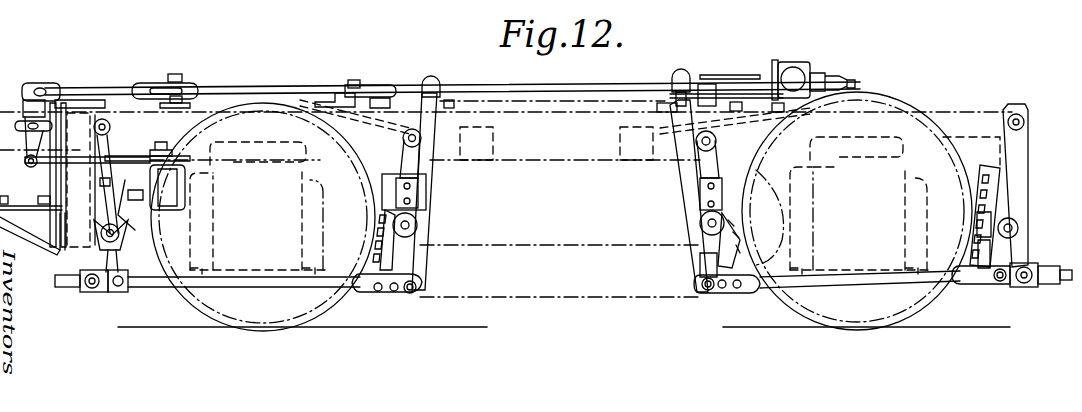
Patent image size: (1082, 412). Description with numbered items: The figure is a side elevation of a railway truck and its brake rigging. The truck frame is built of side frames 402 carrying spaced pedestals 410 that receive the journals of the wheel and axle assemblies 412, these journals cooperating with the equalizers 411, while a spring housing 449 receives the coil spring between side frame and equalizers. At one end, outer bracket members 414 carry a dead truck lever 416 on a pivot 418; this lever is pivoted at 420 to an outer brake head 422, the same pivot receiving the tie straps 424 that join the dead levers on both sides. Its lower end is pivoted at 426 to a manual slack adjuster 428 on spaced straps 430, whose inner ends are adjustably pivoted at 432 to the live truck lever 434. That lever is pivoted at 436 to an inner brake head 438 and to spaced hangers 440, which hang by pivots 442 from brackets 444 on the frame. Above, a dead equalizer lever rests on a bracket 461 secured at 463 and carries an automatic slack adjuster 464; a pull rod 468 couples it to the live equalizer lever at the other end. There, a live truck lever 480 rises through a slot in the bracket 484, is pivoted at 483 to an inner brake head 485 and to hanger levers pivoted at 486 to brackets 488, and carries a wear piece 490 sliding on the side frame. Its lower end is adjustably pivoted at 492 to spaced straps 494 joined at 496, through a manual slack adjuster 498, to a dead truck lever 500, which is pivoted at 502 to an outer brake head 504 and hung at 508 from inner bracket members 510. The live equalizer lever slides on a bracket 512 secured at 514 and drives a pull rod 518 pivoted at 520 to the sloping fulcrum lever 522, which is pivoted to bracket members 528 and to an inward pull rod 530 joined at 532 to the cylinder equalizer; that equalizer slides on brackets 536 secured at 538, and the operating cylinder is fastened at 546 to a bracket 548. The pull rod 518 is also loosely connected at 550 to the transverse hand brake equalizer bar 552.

The side frames 402 is at (562, 154).
The pedestals 410 is at (808, 188).
The equalizers 411 is at (553, 238).
The wheel and axle assemblies 412 is at (925, 298).
The outer bracket members 414 is at (1006, 108).
The dead truck lever 416 is at (995, 172).
The pivot 418 is at (1020, 115).
The pivot 420 is at (977, 223).
The brake head 422 is at (977, 253).
The tie straps 424 is at (1020, 222).
The pivot 426 is at (1012, 287).
The manual slack adjuster 428 is at (1045, 268).
The spaced straps 430 is at (785, 300).
The pivotal and adjustable connection 432 is at (700, 293).
The live truck lever 434 is at (712, 222).
The pivot 436 is at (705, 250).
The inner brake head 438 is at (700, 285).
The spaced hangers 440 is at (700, 195).
The pivot 442 is at (752, 150).
The brackets 444 is at (716, 141).
The spring housing 449 is at (700, 168).
The bracket 461 is at (710, 90).
The securing means 463 is at (690, 105).
The automatic slack adjuster 464 is at (745, 72).
The pull rod 468 is at (512, 84).
The live truck lever 480 is at (432, 200).
The pivot 483 is at (420, 224).
The bracket 484 is at (420, 160).
The inner brake head 485 is at (400, 258).
The pivot 486 is at (414, 137).
The brackets 488 is at (402, 136).
The wear piece 490 is at (418, 192).
The pivotal and adjustable connection 492 is at (412, 283).
The spaced straps 494 is at (285, 283).
The pivot 496 is at (120, 285).
The manual slack adjuster 498 is at (75, 285).
The dead truck lever 500 is at (105, 258).
The pivot 502 is at (121, 173).
The brake head 504 is at (165, 200).
The pivot 508 is at (117, 210).
The inner bracket members 510 is at (102, 118).
The bracket 512 is at (387, 100).
The securing means 514 is at (342, 88).
The pull rod 518 is at (250, 88).
The pivot 520 is at (47, 85).
The fulcrum lever 522 is at (38, 91).
The bracket members 528 is at (30, 165).
The pull rod 530 is at (98, 116).
The pivot 532 is at (165, 150).
The brackets 536 is at (188, 182).
The securing means 538 is at (65, 222).
The securing means 546 is at (31, 196).
The bracket 548 is at (15, 187).
The loose connection 550 is at (175, 76).
The hand brake equalizer bar 552 is at (190, 86).